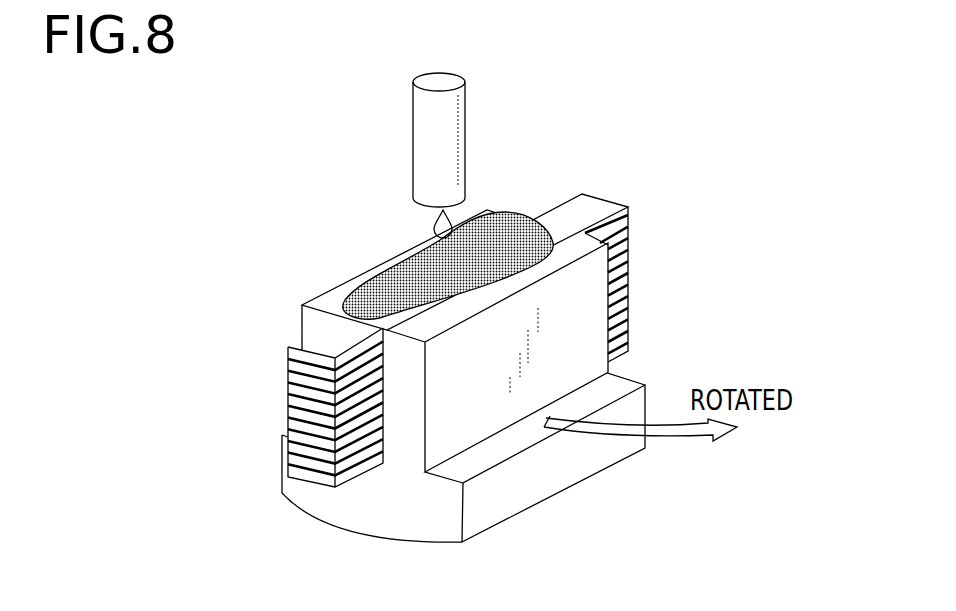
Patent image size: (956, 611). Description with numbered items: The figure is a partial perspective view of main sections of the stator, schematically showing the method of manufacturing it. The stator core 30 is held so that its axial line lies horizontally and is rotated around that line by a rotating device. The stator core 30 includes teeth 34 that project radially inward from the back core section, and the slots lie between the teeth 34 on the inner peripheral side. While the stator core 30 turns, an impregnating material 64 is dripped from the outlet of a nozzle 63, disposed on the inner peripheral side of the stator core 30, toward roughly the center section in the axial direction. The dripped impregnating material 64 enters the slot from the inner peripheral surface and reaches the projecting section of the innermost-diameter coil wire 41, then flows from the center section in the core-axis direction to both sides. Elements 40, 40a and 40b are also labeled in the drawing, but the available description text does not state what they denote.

The stator core 30 is at (588, 497).
The teeth 34 is at (578, 337).
The laminated core 40 is at (464, 304).
The first end of laminated core 40a is at (630, 277).
The second end of laminated core 40b is at (290, 393).
The innermost-diameter coil wire 41 is at (563, 217).
The nozzle 63 is at (413, 124).
The impregnating material 64 is at (430, 265).